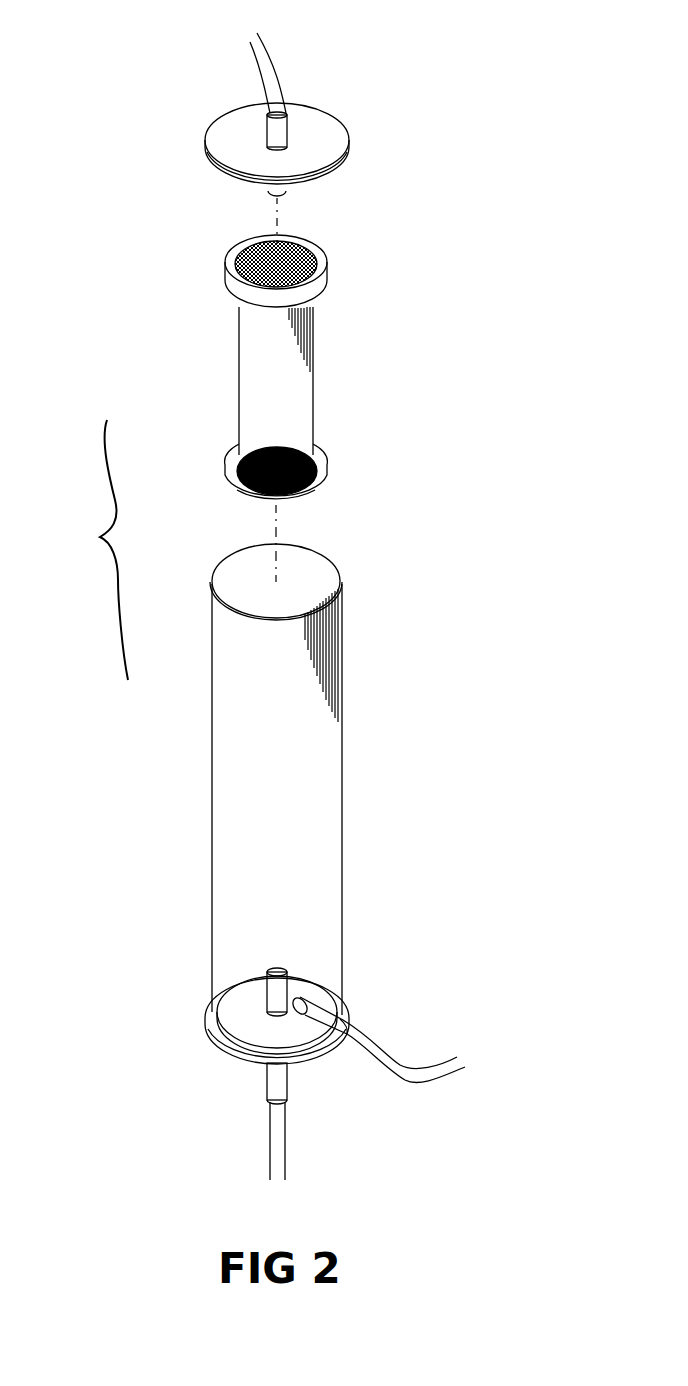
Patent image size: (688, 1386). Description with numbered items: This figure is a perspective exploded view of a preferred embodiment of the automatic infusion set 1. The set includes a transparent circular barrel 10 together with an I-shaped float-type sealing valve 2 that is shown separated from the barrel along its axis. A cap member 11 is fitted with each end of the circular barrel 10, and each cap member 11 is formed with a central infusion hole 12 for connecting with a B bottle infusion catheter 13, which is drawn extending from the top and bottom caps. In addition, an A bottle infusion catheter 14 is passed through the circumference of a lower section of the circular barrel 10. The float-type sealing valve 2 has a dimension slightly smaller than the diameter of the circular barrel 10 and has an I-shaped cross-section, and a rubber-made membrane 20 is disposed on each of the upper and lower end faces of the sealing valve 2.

The automatic infusion set 1 is at (95, 550).
The float-type sealing valve 2 is at (313, 372).
The circular barrel 10 is at (342, 795).
The cap member 11 is at (340, 148).
The central infusion hole 12 is at (265, 196).
The B bottle infusion catheter 13 is at (273, 58).
The A bottle infusion catheter 14 is at (407, 1078).
The rubber-made membrane 20 is at (316, 260).